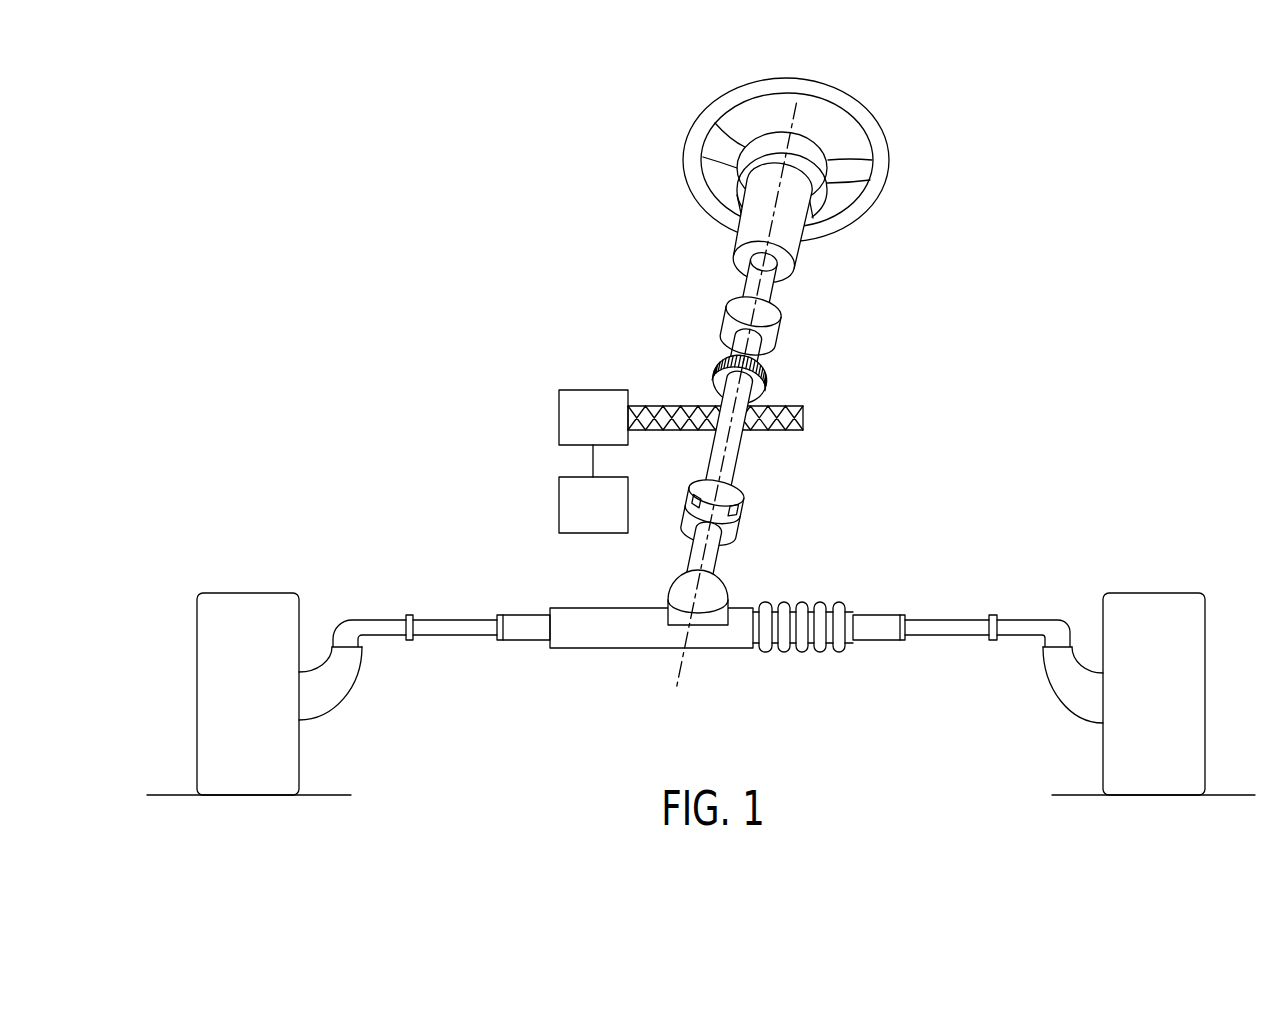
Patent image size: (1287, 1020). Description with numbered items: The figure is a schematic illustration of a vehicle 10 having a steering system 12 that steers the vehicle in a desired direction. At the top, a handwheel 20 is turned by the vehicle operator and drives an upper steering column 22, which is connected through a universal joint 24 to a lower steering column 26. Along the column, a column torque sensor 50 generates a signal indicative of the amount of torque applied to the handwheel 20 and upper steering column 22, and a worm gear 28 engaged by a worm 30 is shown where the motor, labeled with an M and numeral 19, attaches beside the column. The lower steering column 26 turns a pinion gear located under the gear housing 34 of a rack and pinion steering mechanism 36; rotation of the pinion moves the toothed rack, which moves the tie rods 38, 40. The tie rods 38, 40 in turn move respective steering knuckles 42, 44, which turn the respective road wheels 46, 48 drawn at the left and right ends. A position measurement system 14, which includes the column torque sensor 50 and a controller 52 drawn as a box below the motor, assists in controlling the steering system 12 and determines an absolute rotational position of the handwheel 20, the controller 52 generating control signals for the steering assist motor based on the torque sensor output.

The vehicle 10 is at (1175, 513).
The steering system 12 is at (975, 310).
The position measurement system 14 is at (408, 228).
The electric motor 19 is at (603, 388).
The handwheel 20 is at (843, 108).
The upper steering column 22 is at (782, 277).
The universal joint 24 is at (740, 510).
The lower steering column 26 is at (715, 565).
The worm gear 28 is at (757, 378).
The worm 30 is at (802, 414).
The gear housing 34 is at (677, 588).
The steering mechanism 36 is at (780, 655).
The tie rod 38 is at (452, 628).
The tie rod 40 is at (945, 628).
The steering knuckle 42 is at (340, 683).
The steering knuckle 44 is at (1068, 680).
The road wheel 46 is at (226, 608).
The road wheel 48 is at (1140, 608).
The column torque sensor 50 is at (778, 322).
The controller 52 is at (559, 505).